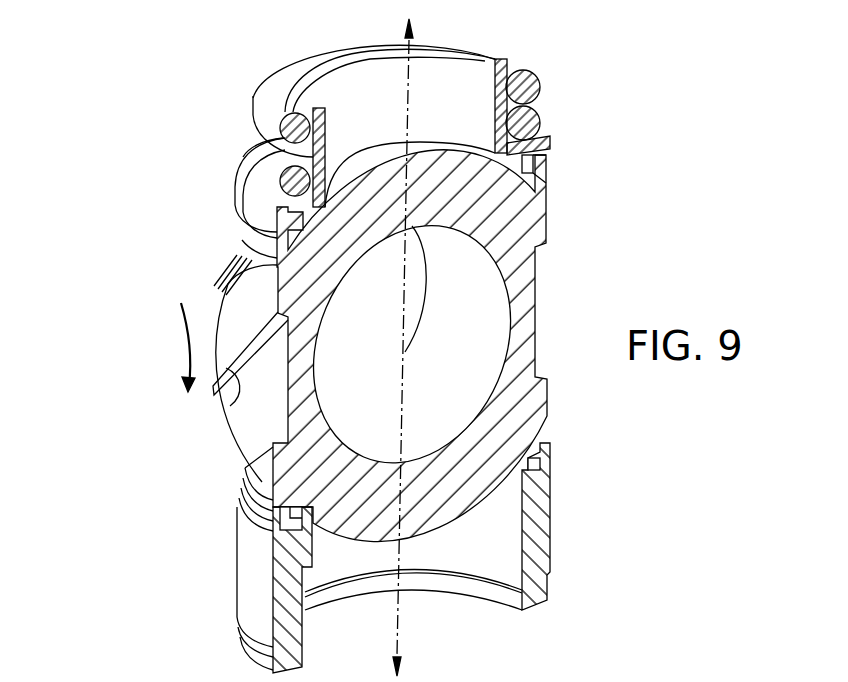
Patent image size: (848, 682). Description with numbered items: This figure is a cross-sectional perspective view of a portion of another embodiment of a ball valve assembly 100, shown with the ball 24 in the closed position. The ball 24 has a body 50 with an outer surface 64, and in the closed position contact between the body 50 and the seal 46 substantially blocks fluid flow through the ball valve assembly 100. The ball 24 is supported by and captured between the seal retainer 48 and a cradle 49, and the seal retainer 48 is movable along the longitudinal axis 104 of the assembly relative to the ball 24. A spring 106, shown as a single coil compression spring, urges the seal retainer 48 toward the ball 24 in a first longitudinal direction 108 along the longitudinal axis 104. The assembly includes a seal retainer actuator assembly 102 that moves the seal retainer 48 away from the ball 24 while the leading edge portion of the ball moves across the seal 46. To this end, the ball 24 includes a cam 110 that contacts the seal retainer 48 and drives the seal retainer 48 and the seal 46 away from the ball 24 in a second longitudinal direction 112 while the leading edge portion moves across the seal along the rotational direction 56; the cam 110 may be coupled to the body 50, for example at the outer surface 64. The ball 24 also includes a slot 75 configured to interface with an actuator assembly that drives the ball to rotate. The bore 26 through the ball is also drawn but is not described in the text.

The ball 24 is at (305, 488).
The bore / passage 26 is at (372, 407).
The seal 46 is at (530, 172).
The seal retainer 48 is at (537, 157).
The cradle 49 is at (532, 530).
The body 50 is at (517, 407).
The rotational direction 56 is at (178, 340).
The outer surface 64 is at (218, 283).
The slot 75 is at (230, 406).
The ball valve assembly 100 is at (128, 320).
The seal retainer actuator assembly 102 is at (158, 245).
The longitudinal axis 104 is at (410, 107).
The spring 106 is at (527, 83).
The first longitudinal direction 108 is at (400, 642).
The cam 110 is at (233, 248).
The second longitudinal direction 112 is at (409, 58).